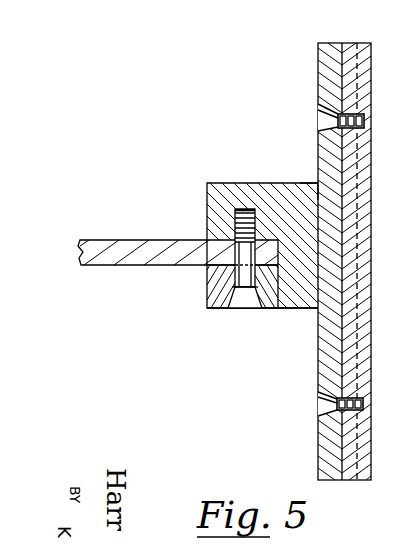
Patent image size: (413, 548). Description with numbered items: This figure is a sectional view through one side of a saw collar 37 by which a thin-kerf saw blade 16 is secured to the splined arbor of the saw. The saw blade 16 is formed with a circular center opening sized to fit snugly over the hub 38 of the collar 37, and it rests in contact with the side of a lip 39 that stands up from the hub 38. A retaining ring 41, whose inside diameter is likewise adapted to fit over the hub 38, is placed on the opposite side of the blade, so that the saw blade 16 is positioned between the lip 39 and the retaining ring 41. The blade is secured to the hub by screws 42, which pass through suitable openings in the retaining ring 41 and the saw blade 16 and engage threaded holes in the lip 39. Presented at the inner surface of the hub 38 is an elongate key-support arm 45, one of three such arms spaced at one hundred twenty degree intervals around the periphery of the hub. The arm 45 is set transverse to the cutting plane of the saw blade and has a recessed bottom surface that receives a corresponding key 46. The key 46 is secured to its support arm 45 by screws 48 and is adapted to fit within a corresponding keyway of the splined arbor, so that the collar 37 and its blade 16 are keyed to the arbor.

The saw blade 16 is at (80, 248).
The saw collar 37 is at (312, 181).
The hub 38 is at (296, 308).
The lip 39 is at (212, 203).
The retaining ring 41 is at (212, 293).
The screw 42 is at (238, 297).
The key-support arm 45 is at (326, 71).
The key 46 is at (357, 62).
The screw 48 is at (319, 118).